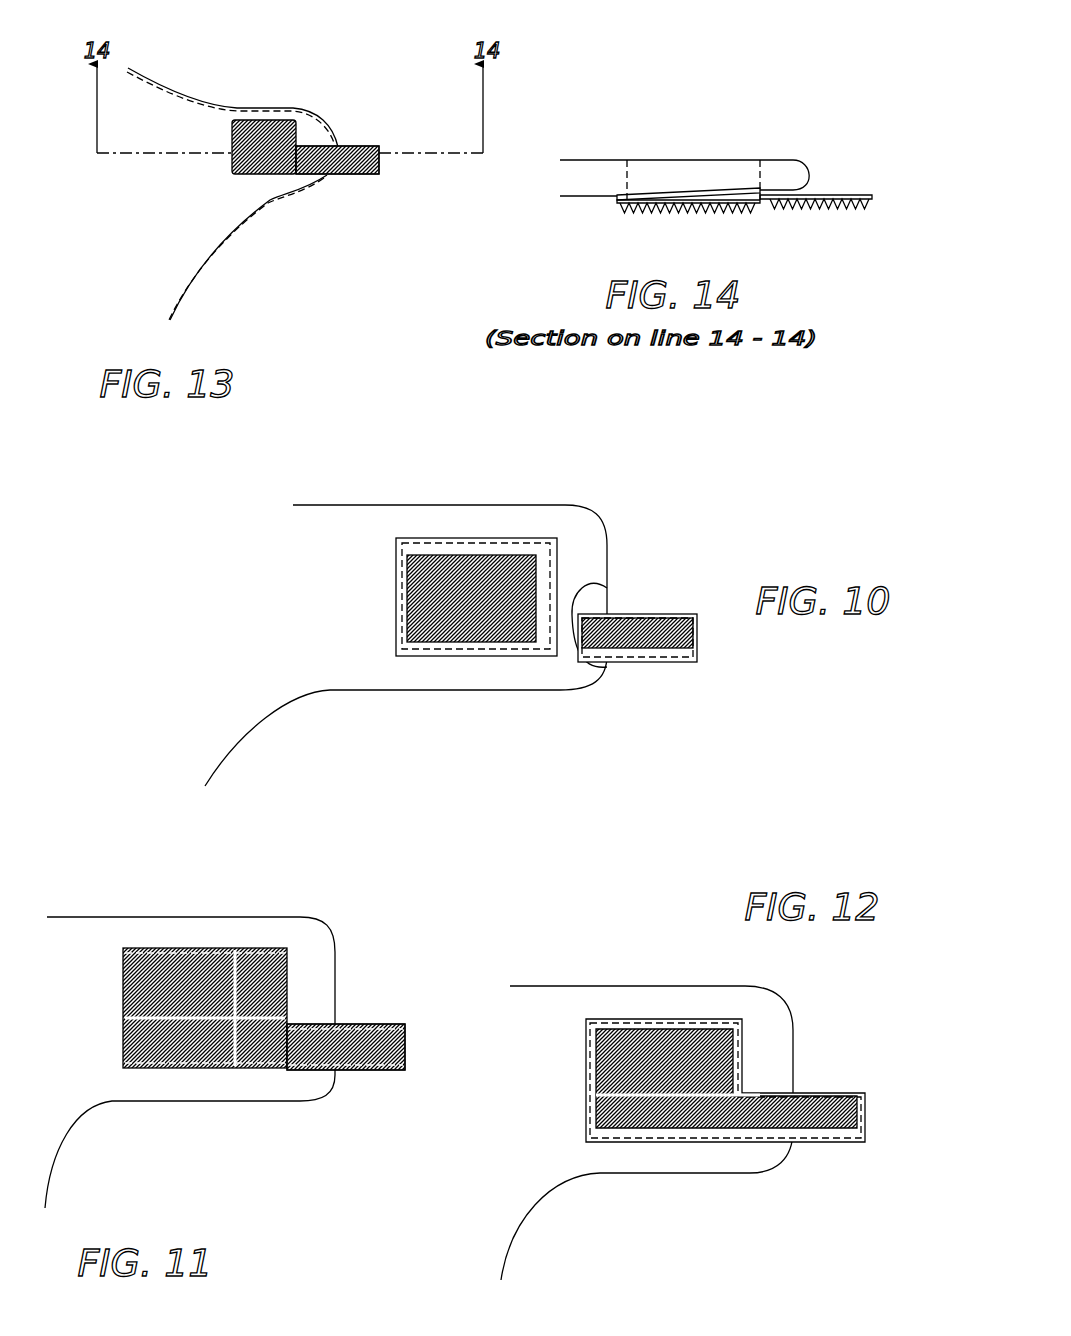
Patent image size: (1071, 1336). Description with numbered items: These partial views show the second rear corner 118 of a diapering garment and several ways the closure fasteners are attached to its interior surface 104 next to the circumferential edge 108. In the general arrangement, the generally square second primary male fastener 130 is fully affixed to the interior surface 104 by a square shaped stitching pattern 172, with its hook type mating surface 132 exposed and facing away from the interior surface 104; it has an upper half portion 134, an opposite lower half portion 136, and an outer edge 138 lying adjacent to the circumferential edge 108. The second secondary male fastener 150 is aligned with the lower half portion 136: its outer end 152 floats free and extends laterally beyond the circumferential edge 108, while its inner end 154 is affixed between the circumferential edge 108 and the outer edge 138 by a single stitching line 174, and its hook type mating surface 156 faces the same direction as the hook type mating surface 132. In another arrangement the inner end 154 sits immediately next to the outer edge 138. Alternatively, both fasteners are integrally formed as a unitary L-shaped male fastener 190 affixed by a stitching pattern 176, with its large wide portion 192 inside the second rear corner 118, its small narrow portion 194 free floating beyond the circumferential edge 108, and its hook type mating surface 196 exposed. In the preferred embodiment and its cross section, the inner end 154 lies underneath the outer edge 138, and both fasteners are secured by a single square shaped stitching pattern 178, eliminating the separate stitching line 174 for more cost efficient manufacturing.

In FIG. 13, the interior surface 104 is at (137, 257).
In FIG. 10, the interior surface 104 is at (458, 670).
In FIG. 11, the interior surface 104 is at (73, 977).
In FIG. 12, the interior surface 104 is at (613, 1152).
In FIG. 13, the circumferential edge 108 is at (333, 130).
In FIG. 14, the circumferential edge 108 is at (806, 181).
In FIG. 10, the circumferential edge 108 is at (607, 560).
In FIG. 11, the circumferential edge 108 is at (333, 980).
In FIG. 12, the circumferential edge 108 is at (752, 1158).
In FIG. 13, the second rear corner 118 is at (182, 207).
In FIG. 14, the second rear corner 118 is at (683, 192).
In FIG. 10, the second rear corner 118 is at (346, 652).
In FIG. 11, the second rear corner 118 is at (71, 1064).
In FIG. 12, the second rear corner 118 is at (511, 1202).
In FIG. 13, the second primary male fastener 130 is at (267, 168).
In FIG. 14, the second primary male fastener 130 is at (617, 199).
In FIG. 10, the second primary male fastener 130 is at (397, 564).
In FIG. 11, the second primary male fastener 130 is at (192, 993).
In FIG. 10, the hook type mating surface 132 is at (408, 596).
In FIG. 10, the upper half portion 134 is at (460, 575).
In FIG. 10, the lower half portion 136 is at (436, 608).
In FIG. 13, the outer edge 138 is at (285, 175).
In FIG. 14, the outer edge 138 is at (778, 212).
In FIG. 10, the outer edge 138 is at (558, 577).
In FIG. 11, the outer edge 138 is at (293, 963).
In FIG. 13, the second secondary male fastener 150 is at (379, 164).
In FIG. 14, the second secondary male fastener 150 is at (843, 193).
In FIG. 10, the second secondary male fastener 150 is at (667, 617).
In FIG. 11, the second secondary male fastener 150 is at (353, 1070).
In FIG. 14, the outer end 152 is at (878, 200).
In FIG. 10, the outer end 152 is at (697, 637).
In FIG. 13, the inner end 154 is at (273, 121).
In FIG. 14, the inner end 154 is at (738, 188).
In FIG. 10, the inner end 154 is at (607, 590).
In FIG. 11, the inner end 154 is at (296, 1070).
In FIG. 10, the hook type mating surface 156 is at (668, 618).
In FIG. 10, the square shaped stitching pattern 172 is at (397, 560).
In FIG. 10, the single stitching line 174 is at (607, 651).
In FIG. 12, the stitching pattern 176 is at (595, 1075).
In FIG. 13, the single square shaped stitching pattern 178 is at (231, 146).
In FIG. 14, the single square shaped stitching pattern 178 is at (628, 188).
In FIG. 12, the L-shaped male fastener 190 is at (686, 1030).
In FIG. 12, the large wide portion 192 is at (588, 1033).
In FIG. 12, the small narrow portion 194 is at (865, 1113).
In FIG. 12, the hook type mating surface 196 is at (655, 1094).